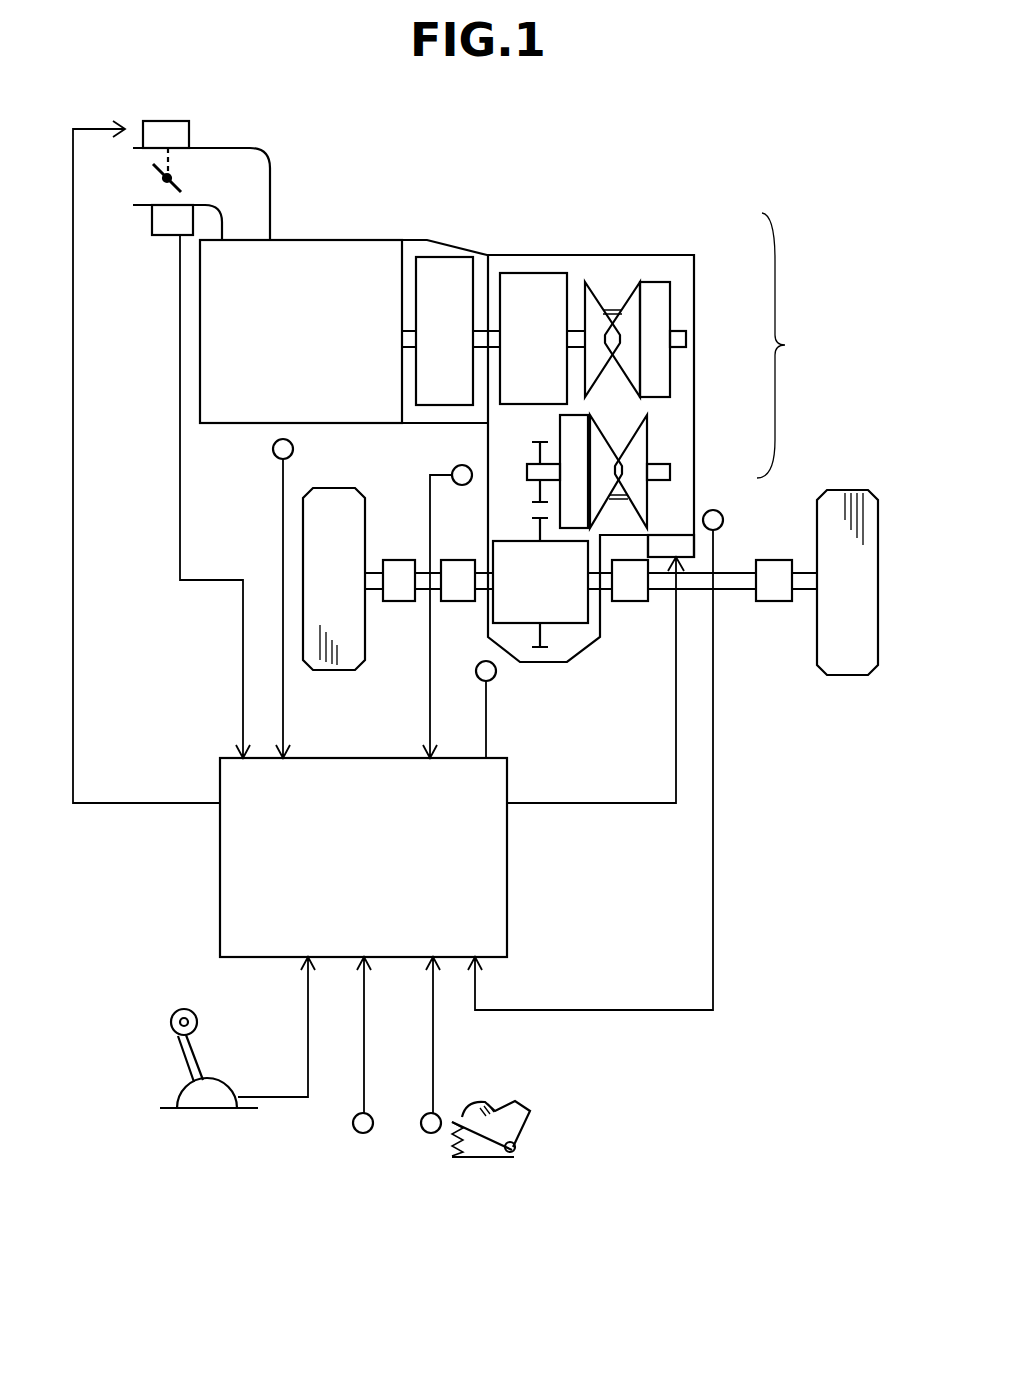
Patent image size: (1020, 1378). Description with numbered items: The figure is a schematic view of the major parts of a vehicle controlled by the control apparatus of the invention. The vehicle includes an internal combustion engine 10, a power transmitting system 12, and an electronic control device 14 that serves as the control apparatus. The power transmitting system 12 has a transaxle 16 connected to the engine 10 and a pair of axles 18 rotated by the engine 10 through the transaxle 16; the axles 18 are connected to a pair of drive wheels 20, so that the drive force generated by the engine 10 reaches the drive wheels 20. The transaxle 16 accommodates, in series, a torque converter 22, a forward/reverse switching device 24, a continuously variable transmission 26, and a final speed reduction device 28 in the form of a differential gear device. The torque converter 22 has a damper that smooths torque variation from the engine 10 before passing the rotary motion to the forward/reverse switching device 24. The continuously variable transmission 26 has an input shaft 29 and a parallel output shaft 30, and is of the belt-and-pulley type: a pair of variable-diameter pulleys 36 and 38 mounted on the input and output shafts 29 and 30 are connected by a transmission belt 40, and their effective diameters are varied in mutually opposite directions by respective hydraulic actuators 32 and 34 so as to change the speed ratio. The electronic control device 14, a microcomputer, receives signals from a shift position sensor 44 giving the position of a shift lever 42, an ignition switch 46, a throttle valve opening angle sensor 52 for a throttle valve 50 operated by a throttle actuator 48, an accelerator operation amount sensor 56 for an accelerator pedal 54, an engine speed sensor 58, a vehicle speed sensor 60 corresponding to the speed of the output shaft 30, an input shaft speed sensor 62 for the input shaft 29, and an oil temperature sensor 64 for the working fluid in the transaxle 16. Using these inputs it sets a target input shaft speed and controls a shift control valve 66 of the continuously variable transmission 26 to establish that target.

The internal combustion engine 10 is at (333, 258).
The power transmitting system 12 is at (555, 176).
The electronic control device 14 is at (227, 872).
The transaxle 16 is at (588, 255).
The axles 18 is at (425, 582).
The drive wheels 20 is at (320, 500).
The torque converter 22 is at (448, 268).
The forward/reverse switching device 24 is at (530, 290).
The continuously variable transmission 26 is at (791, 345).
The final speed reduction device 28 is at (555, 612).
The input shaft 29 is at (678, 337).
The output shaft 30 is at (660, 473).
The hydraulic actuator 32 is at (662, 312).
The hydraulic actuator 34 is at (576, 455).
The variable-diameter pulley 36 is at (689, 279).
The variable-diameter pulley 38 is at (669, 447).
The transmission belt 40 is at (622, 307).
The shift lever 42 is at (198, 1052).
The shift position sensor 44 is at (210, 1100).
The ignition switch 46 is at (360, 1135).
The throttle actuator 48 is at (172, 130).
The throttle valve 50 is at (160, 178).
The throttle valve opening angle sensor 52 is at (158, 225).
The accelerator pedal 54 is at (483, 1137).
The accelerator operation amount sensor 56 is at (428, 1135).
The engine speed sensor 58 is at (273, 448).
The vehicle speed sensor 60 is at (722, 512).
The input shaft speed sensor 62 is at (455, 466).
The oil temperature sensor 64 is at (495, 673).
The shift control valve 66 is at (657, 548).